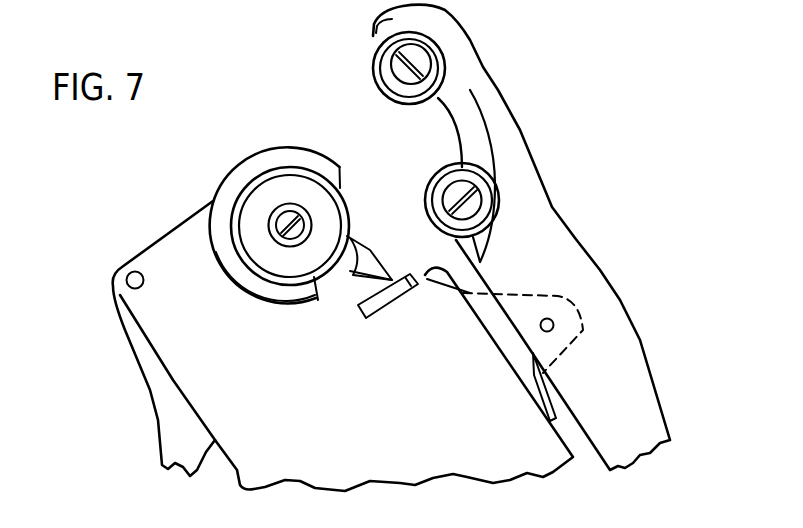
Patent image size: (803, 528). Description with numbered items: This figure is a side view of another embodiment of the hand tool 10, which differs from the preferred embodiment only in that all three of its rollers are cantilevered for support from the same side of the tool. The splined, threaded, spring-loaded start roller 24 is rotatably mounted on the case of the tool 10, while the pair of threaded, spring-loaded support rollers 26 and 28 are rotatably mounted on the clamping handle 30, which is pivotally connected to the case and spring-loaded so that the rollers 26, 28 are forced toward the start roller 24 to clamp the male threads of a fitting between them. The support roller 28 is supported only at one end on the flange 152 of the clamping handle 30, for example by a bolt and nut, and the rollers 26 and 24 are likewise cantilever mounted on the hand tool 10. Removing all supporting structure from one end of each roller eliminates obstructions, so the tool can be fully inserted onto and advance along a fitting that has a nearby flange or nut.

The hand tool 10 is at (92, 356).
The start roller 24 is at (240, 187).
The support roller 26 is at (373, 60).
The support roller 28 is at (440, 167).
The clamping handle 30 is at (586, 226).
The flange 152 is at (458, 97).